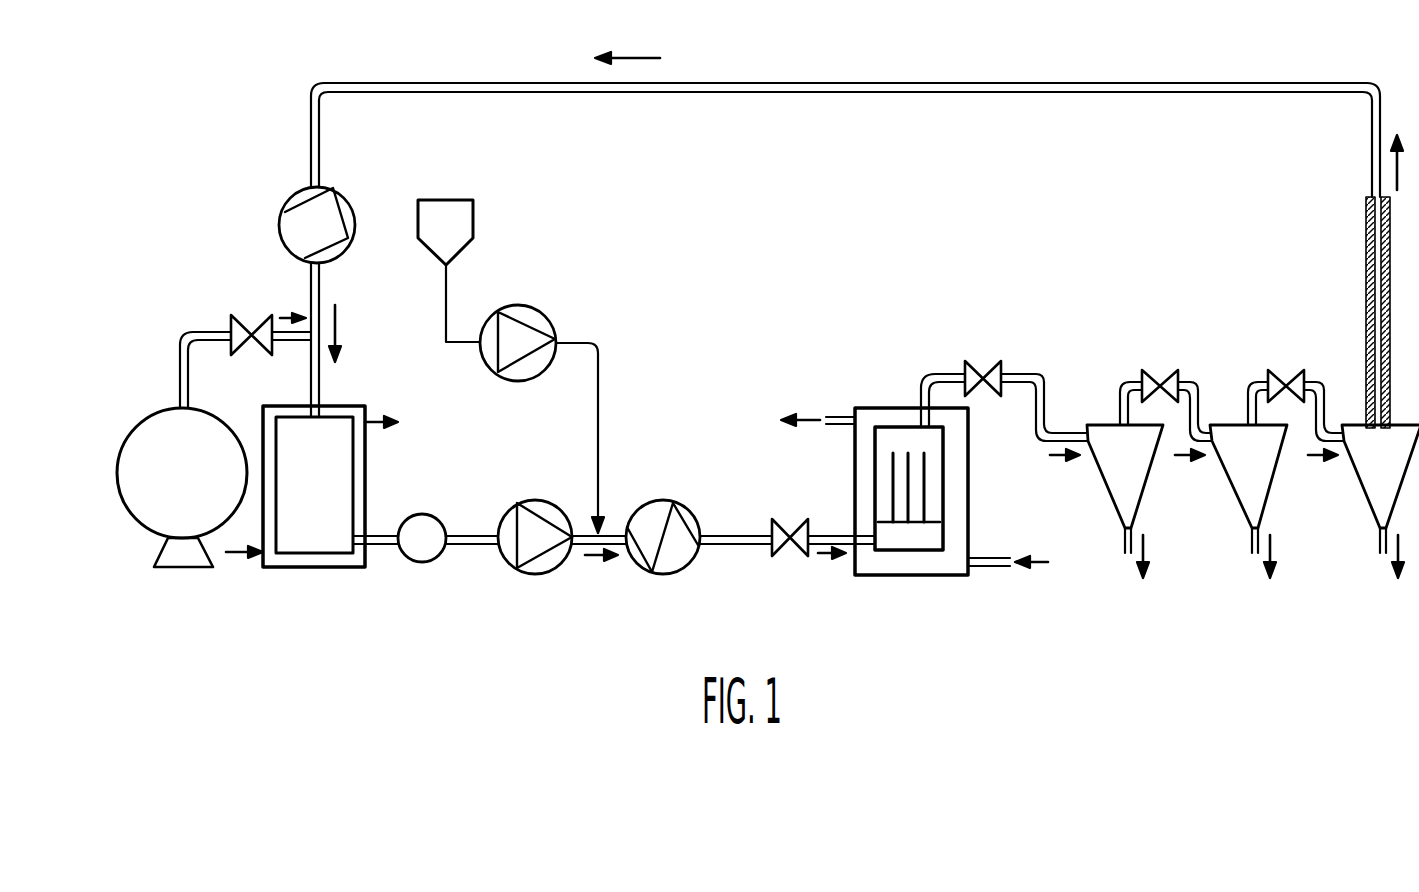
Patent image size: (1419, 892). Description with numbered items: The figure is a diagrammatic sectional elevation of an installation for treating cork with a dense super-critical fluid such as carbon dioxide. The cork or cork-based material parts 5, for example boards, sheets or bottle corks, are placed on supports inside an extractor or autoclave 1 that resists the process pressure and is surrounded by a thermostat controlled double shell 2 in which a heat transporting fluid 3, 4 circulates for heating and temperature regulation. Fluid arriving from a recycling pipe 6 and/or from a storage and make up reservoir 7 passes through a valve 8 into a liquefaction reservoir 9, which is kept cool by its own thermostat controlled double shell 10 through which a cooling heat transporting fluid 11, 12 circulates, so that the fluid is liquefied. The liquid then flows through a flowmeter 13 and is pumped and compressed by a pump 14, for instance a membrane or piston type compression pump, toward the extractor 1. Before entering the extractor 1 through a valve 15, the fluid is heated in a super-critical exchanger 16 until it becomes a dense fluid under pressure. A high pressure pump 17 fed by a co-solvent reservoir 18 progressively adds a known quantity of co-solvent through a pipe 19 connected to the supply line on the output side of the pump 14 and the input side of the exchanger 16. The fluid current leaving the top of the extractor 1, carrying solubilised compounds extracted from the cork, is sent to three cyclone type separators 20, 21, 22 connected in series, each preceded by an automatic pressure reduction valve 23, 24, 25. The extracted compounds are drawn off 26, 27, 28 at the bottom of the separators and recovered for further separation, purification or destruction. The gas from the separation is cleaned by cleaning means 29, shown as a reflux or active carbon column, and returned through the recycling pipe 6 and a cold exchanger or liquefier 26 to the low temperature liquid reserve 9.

The extractor 1 is at (945, 480).
The thermostat controlled double shell 2 is at (935, 577).
The heat transporting fluid 3 is at (997, 568).
The heat transporting fluid 4 is at (841, 408).
The cork or cork-based material parts 5 is at (903, 505).
The recycling pipe 6 is at (865, 93).
The storage and make up reservoir 7 is at (150, 408).
The valve 8 is at (237, 316).
The liquefaction reservoir 9 is at (355, 467).
The thermostat controlled double shell 10 is at (330, 568).
The heat transporting fluid 11 is at (240, 553).
The heat transporting fluid 12 is at (380, 418).
The flowmeter 13 is at (430, 561).
The pump 14 is at (550, 575).
The valve 15 is at (795, 556).
The exchanger 16 is at (685, 575).
The high pressure pump 17 is at (543, 312).
The co-solvent reservoir 18 is at (460, 200).
The pipe 19 is at (600, 410).
The cyclone type separator 20 is at (1101, 480).
The cyclone type separator 21 is at (1228, 480).
The cyclone type separator 22 is at (1361, 480).
The automatic pressure reduction valve 23 is at (970, 367).
The automatic pressure reduction valve 24 is at (1150, 370).
The automatic pressure reduction valve 25 is at (1283, 370).
The draw-off / cold exchanger 26 is at (297, 192).
The draw-off 27 is at (1249, 555).
The draw-off 28 is at (1377, 555).
The cleaning means 29 is at (1366, 225).